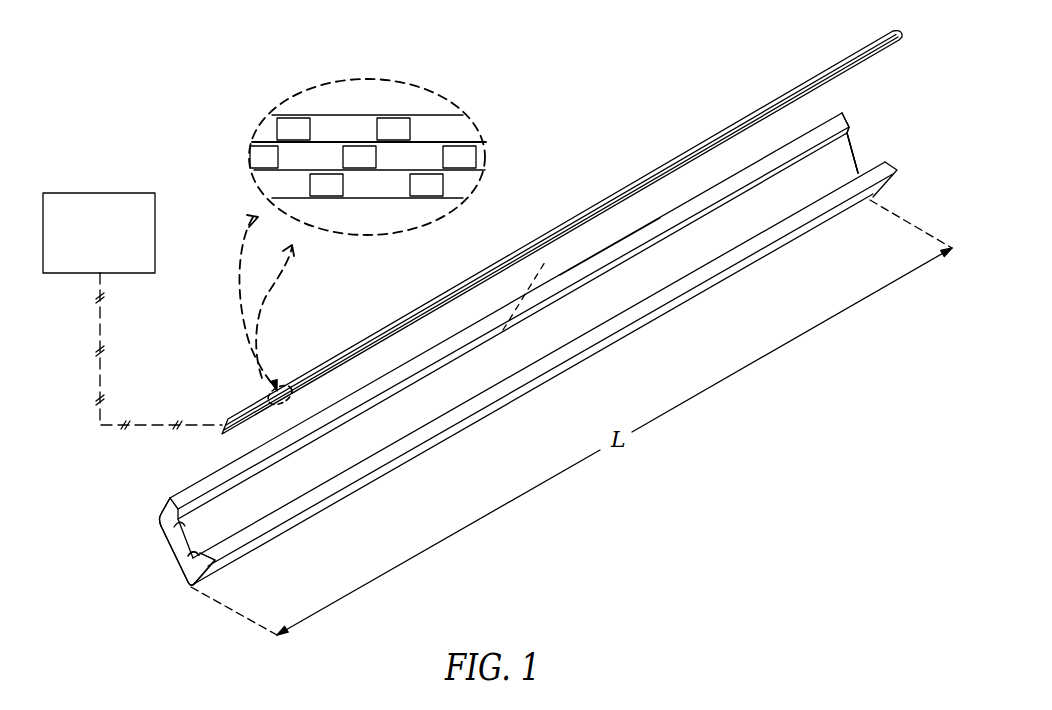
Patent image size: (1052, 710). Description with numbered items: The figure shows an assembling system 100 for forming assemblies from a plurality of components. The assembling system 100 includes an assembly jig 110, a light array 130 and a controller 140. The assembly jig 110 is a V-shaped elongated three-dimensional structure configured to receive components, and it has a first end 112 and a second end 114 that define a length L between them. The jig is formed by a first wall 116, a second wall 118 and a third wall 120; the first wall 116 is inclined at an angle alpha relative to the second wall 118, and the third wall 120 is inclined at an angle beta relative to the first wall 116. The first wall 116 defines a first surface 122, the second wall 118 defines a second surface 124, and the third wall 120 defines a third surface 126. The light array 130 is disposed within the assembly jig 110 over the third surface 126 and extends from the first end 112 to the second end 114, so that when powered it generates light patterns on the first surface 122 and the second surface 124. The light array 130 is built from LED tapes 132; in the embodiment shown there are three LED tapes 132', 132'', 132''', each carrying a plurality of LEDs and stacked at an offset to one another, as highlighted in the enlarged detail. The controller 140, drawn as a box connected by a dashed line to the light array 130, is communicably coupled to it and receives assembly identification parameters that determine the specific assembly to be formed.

The assembling system 100 is at (103, 110).
The assembly jig 110 is at (440, 434).
The first end 112 is at (186, 591).
The second end 114 is at (861, 144).
The first wall 116 is at (173, 548).
The second wall 118 is at (210, 567).
The third wall 120 is at (160, 515).
The first surface 122 is at (816, 176).
The second surface 124 is at (203, 553).
The third surface 126 is at (615, 267).
The light array 130 is at (245, 408).
The LED tape 132 is at (367, 138).
The first LED tape 132' is at (401, 102).
The second LED tape 132'' is at (418, 145).
The third LED tape 132''' is at (436, 187).
The controller 140 is at (111, 244).